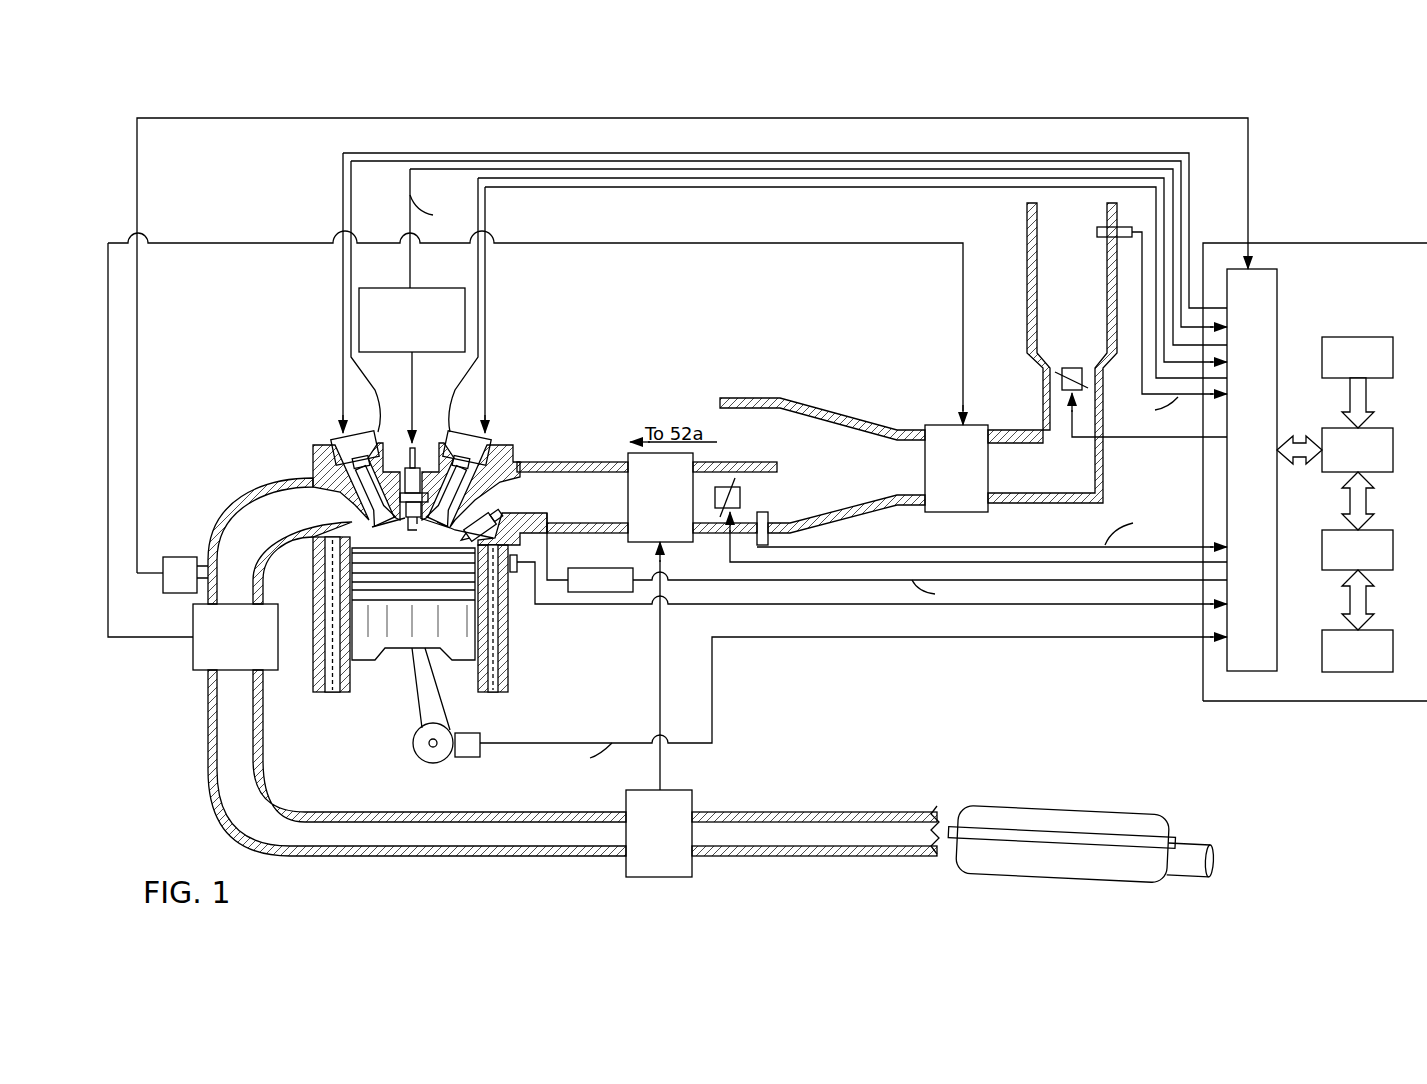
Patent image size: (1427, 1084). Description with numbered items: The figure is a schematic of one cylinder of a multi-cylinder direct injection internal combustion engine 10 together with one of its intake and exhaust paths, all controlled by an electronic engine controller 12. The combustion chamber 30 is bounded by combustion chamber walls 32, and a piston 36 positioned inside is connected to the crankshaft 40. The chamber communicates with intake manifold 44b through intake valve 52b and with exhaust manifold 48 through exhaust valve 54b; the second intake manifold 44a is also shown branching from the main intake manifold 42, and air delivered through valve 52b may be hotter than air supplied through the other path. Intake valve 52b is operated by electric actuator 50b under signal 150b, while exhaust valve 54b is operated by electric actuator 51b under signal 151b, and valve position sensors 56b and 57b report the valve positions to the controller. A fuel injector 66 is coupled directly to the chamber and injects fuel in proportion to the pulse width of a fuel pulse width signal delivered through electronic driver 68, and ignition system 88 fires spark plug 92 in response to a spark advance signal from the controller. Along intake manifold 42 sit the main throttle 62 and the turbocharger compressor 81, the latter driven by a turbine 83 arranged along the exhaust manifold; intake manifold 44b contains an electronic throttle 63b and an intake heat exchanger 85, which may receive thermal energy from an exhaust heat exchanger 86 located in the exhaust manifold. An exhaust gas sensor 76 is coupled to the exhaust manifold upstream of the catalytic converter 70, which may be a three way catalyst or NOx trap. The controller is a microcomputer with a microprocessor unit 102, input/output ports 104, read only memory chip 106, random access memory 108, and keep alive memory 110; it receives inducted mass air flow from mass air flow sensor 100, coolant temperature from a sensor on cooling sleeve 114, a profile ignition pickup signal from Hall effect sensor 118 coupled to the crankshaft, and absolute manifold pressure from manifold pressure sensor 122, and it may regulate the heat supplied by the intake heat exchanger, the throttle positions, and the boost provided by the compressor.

The direct injection internal combustion engine 10 is at (278, 390).
The electronic engine controller 12 is at (1357, 242).
The combustion chamber 30 is at (412, 542).
The combustion chamber walls 32 is at (355, 675).
The piston 36 is at (413, 665).
The crankshaft 40 is at (425, 760).
The intake manifold 42 is at (1048, 483).
The intake manifold 44a is at (764, 446).
The intake manifold 44b is at (609, 511).
The exhaust manifold 48 is at (296, 514).
The electric actuator 50b is at (487, 430).
The electric actuator 51b is at (340, 430).
The intake valve 52b is at (490, 470).
The exhaust valve 54b is at (335, 470).
The valve position sensor 56b is at (823, 305).
The valve position sensor 57b is at (789, 296).
The main throttle 62 is at (1070, 366).
The electronic throttle 63b is at (740, 493).
The fuel injector 66 is at (473, 540).
The electronic driver 68 is at (589, 592).
The catalytic converter 70 is at (1140, 815).
The exhaust gas sensor 76 is at (170, 587).
The compressor 81 is at (945, 480).
The turbine 83 is at (224, 648).
The intake heat exchanger 85 is at (649, 508).
The exhaust heat exchanger 86 is at (648, 845).
The ignition system 88 is at (404, 288).
The spark plug 92 is at (418, 457).
The mass air flow sensor 100 is at (1098, 229).
The microprocessor unit 102 is at (1377, 426).
The input/output ports 104 is at (1277, 342).
The read only memory chip 106 is at (1365, 338).
The random access memory 108 is at (1377, 530).
The keep alive memory 110 is at (1377, 631).
The cooling sleeve 114 is at (492, 643).
The Hall effect sensor 118 is at (470, 760).
The manifold pressure sensor 122 is at (768, 533).
The signal 150b is at (485, 307).
The signal 151b is at (343, 327).